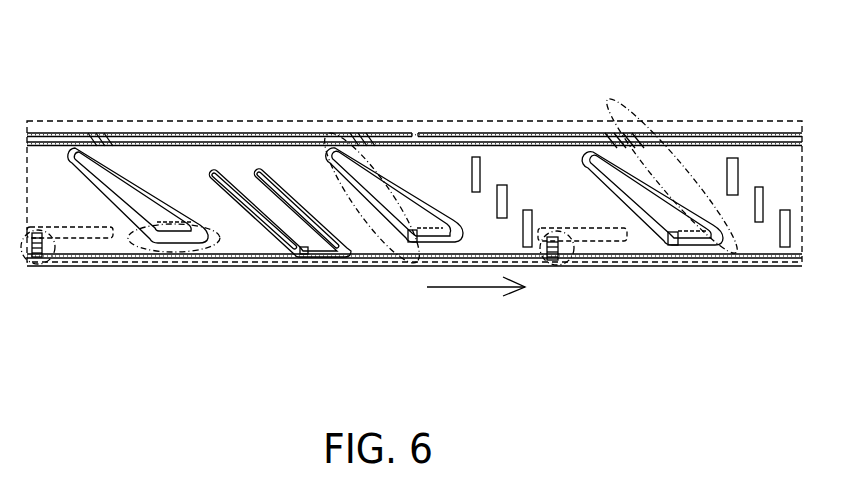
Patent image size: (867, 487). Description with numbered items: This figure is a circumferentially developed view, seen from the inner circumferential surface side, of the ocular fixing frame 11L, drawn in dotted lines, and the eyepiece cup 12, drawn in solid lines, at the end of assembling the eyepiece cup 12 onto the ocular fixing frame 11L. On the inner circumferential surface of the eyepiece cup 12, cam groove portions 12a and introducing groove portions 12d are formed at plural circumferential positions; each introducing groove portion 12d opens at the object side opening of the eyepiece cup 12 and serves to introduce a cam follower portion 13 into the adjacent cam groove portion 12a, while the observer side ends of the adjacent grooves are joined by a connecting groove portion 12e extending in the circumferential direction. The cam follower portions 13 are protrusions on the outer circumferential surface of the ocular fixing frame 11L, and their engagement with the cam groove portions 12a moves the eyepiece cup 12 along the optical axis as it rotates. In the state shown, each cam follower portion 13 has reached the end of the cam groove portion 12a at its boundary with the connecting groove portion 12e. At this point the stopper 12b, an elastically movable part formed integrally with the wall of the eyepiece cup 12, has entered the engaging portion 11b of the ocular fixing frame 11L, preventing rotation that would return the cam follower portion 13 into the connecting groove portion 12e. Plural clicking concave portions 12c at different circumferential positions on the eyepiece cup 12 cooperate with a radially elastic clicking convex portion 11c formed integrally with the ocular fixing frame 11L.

The ocular fixing frame 11L is at (414, 151).
The engaging portion 11b is at (298, 245).
The clicking convex portion 11c is at (42, 215).
The eyepiece cup 12 is at (422, 234).
The cam groove portion 12a is at (524, 258).
The stopper 12b is at (300, 271).
The clicking concave portion 12c is at (631, 252).
The introducing groove portion 12d is at (392, 165).
The connecting groove portion 12e is at (169, 270).
The cam follower portion 13 is at (413, 232).